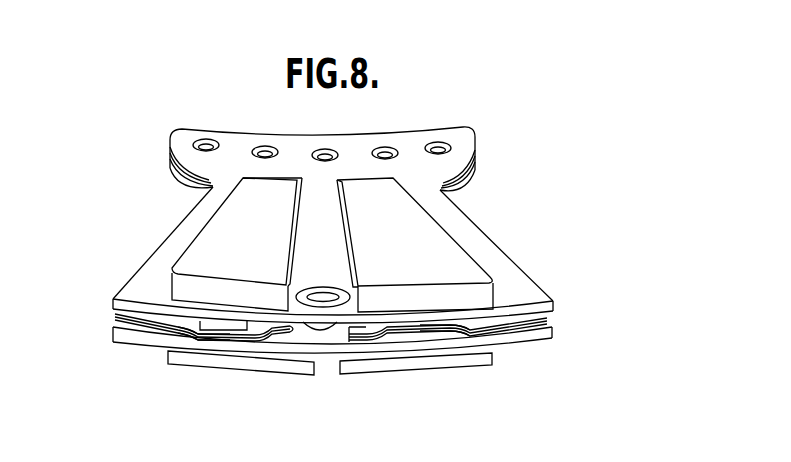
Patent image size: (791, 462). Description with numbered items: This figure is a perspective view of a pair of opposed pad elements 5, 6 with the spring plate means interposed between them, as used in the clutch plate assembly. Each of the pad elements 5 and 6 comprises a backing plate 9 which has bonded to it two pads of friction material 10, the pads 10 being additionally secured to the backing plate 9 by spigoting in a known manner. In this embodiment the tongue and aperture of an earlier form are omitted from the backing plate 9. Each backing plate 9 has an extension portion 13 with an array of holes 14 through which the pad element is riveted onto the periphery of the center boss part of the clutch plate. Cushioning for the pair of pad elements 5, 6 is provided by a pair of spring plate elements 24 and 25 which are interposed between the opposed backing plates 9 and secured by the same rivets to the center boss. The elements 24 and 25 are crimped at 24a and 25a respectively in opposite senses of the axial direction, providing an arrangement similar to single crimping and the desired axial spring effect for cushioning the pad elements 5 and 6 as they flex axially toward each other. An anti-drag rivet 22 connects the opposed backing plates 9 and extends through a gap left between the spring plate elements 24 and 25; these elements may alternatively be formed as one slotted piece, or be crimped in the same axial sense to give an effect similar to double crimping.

The pad element 5 is at (156, 221).
The pad element 6 is at (150, 367).
The backing plate 9 is at (153, 267).
The pad of friction material 10 is at (228, 208).
The extension portion 13 is at (297, 150).
The holes 14 is at (206, 139).
The anti-drag rivet 22 is at (318, 292).
The spring plate element 24 is at (114, 320).
The crimp 24a is at (230, 341).
The spring plate element 25 is at (552, 314).
The crimp 25a is at (440, 336).